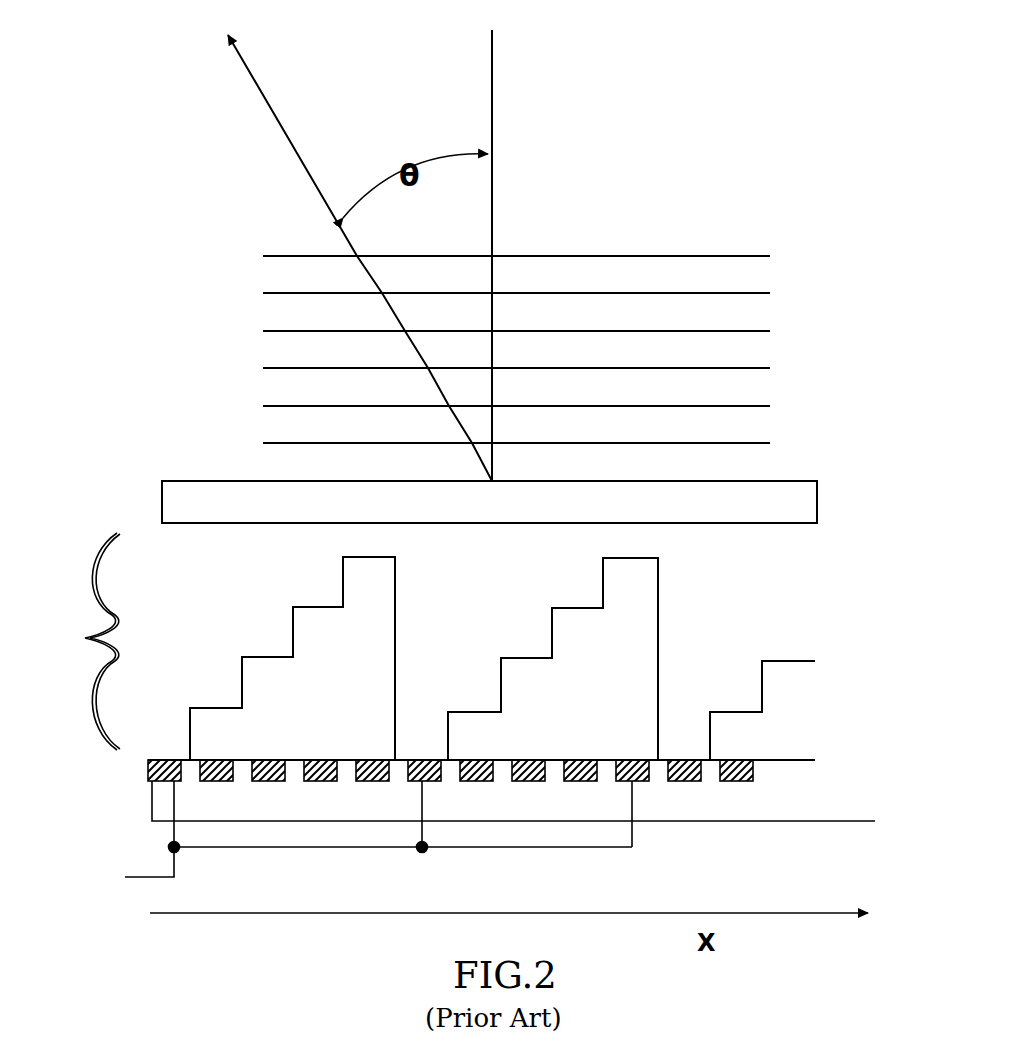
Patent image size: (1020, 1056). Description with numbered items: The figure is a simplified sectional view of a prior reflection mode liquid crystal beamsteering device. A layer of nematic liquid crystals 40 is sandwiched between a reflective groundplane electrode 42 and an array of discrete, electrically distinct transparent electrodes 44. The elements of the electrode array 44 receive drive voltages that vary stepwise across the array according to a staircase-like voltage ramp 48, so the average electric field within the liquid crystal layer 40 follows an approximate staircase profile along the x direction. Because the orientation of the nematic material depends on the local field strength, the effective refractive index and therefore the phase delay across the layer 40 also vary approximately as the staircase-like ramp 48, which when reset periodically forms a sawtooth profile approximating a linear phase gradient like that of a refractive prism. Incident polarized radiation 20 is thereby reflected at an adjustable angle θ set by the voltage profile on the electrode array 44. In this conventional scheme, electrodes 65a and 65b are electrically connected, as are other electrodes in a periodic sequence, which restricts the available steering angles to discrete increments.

The incident radiation 20 is at (727, 256).
The reflective groundplane electrode 42 is at (817, 504).
The layer of nematic liquid crystals 40 is at (84, 638).
The staircase-like voltage ramp 48 is at (658, 621).
The array of transparent electrodes 44 is at (788, 786).
The electrode 65a is at (152, 800).
The electrode 65b is at (418, 760).